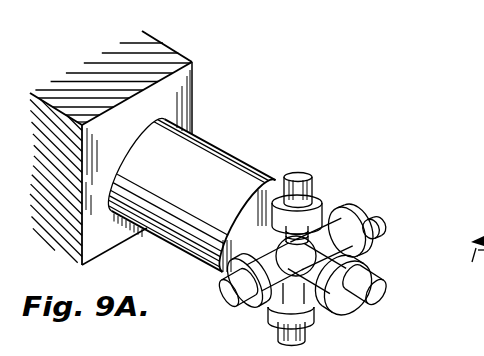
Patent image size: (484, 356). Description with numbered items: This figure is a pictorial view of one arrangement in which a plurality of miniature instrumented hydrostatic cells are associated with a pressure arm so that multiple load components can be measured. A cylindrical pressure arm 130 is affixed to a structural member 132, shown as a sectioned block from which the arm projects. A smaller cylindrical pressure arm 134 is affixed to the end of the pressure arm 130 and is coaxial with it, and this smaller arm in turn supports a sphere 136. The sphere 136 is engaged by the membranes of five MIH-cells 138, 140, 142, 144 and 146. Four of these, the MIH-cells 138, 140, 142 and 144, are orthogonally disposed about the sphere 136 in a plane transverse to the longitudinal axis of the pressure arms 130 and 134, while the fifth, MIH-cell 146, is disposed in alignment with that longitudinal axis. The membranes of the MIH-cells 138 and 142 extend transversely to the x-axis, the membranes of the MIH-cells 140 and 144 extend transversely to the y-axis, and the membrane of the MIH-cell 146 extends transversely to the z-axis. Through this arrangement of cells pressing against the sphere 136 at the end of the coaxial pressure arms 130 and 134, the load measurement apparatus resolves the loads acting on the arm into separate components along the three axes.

The cylindrical pressure arm 130 is at (203, 152).
The structural member 132 is at (188, 80).
The smaller cylindrical pressure arm 134 is at (251, 183).
The sphere 136 is at (331, 221).
The MIH-cell 138 is at (254, 313).
The MIH-cell 140 is at (321, 194).
The MIH-cell 142 is at (372, 240).
The MIH-cell 144 is at (308, 320).
The MIH-cell 146 is at (375, 275).